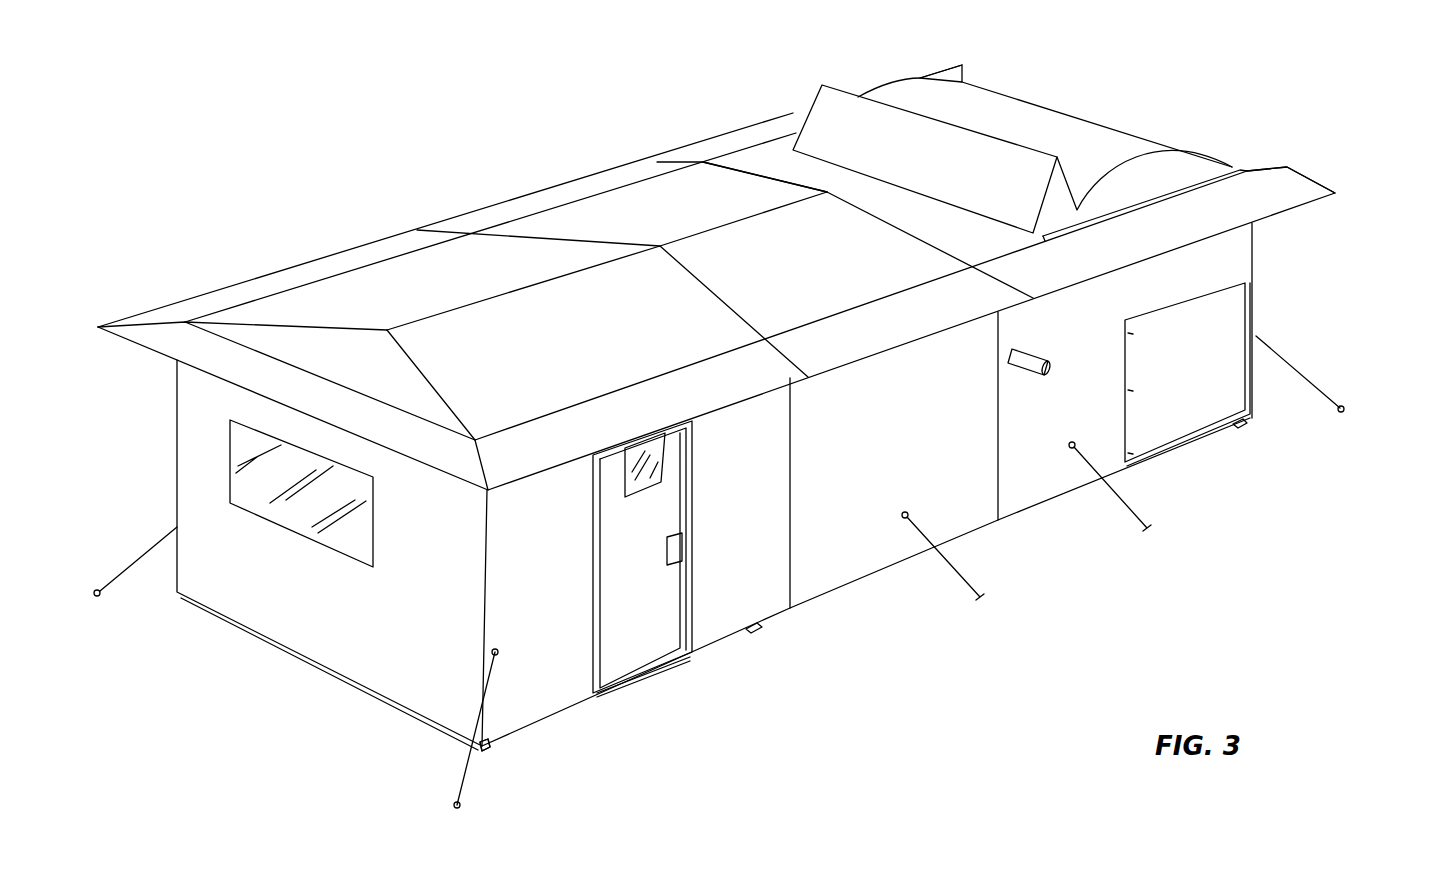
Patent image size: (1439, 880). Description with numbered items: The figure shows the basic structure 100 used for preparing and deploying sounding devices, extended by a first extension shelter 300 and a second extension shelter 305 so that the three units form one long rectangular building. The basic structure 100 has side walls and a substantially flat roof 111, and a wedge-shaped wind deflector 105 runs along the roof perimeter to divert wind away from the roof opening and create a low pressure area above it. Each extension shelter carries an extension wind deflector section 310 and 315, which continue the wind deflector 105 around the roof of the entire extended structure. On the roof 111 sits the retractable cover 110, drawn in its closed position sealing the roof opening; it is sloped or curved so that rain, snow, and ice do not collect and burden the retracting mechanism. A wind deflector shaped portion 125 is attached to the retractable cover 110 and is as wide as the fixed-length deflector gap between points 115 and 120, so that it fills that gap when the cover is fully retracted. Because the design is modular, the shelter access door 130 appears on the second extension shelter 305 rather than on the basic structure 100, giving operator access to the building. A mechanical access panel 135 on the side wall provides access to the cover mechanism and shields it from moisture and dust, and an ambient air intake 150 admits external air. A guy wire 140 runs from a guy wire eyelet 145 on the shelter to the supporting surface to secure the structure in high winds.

The basic structure 100 is at (1258, 253).
The wind deflector 105 is at (1270, 195).
The retractable cover 110 is at (1077, 127).
The roof 111 is at (757, 162).
The wind deflector gap point 115 is at (967, 77).
The wind deflector gap point 120 is at (1270, 165).
The wind deflector shaped portion 125 is at (838, 108).
The shelter access door 130 is at (630, 638).
The mechanical access panel 135 is at (1185, 418).
The guy wire 140 is at (458, 765).
The guy wire eyelet 145 is at (497, 654).
The ambient air intake 150 is at (1027, 368).
The first extension shelter 300 is at (557, 179).
The second extension shelter 305 is at (307, 258).
The extension wind deflector section 310 is at (495, 213).
The extension wind deflector section 315 is at (250, 282).